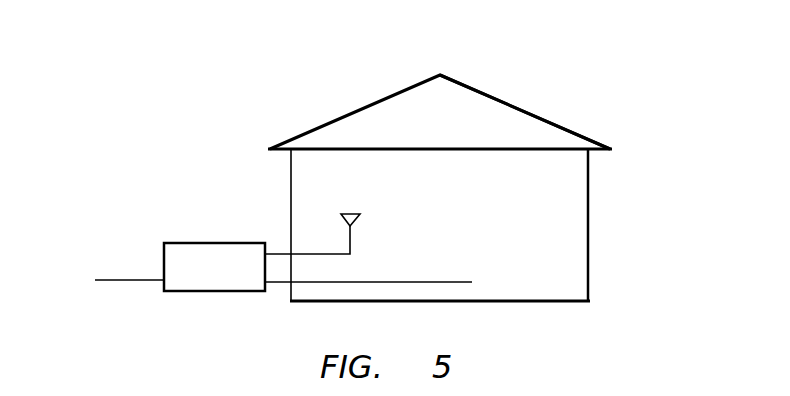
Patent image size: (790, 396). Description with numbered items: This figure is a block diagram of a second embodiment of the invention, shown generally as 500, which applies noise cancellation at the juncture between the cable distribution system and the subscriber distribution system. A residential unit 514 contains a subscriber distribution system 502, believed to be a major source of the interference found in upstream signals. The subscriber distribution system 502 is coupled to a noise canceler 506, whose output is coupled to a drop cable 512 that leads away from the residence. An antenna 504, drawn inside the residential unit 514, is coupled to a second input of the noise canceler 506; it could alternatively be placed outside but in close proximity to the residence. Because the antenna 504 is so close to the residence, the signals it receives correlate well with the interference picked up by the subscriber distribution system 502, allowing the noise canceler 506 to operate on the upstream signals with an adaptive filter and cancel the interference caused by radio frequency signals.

The second embodiment 500 is at (305, 66).
The subscriber distribution system 502 is at (457, 282).
The antenna 504 is at (358, 212).
The noise canceler 506 is at (212, 243).
The drop cable 512 is at (115, 278).
The residential unit 514 is at (516, 108).